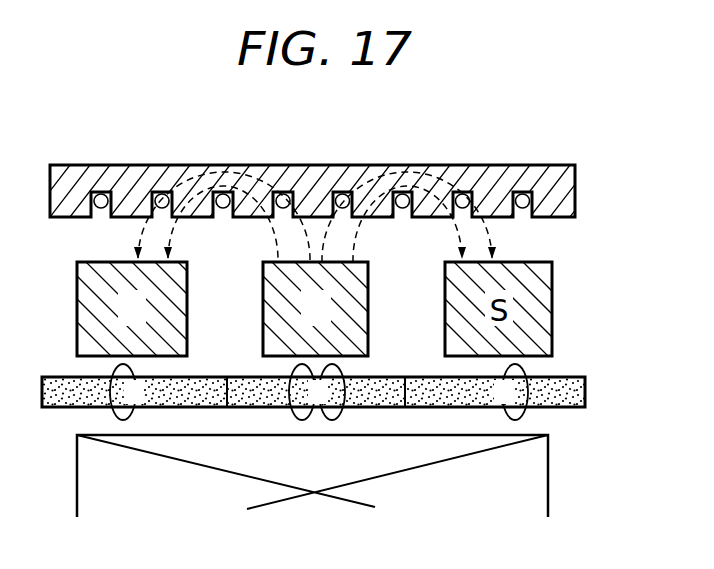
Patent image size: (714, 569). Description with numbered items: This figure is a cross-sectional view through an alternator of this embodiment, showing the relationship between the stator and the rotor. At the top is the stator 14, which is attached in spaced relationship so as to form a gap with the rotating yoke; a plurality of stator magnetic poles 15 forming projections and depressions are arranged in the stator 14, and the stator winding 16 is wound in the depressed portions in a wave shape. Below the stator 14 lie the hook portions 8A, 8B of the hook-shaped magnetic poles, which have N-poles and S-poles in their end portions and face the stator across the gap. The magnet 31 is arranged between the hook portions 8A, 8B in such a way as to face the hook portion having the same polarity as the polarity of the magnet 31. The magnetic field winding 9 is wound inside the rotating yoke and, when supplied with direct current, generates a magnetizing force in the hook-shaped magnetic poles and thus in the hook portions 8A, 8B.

The stator 14 is at (567, 167).
The stator magnetic poles 15 is at (497, 190).
The stator winding 16 is at (345, 192).
The hook portion 8A is at (365, 310).
The hook portion 8B is at (82, 294).
The magnet 31 is at (67, 407).
The magnetic field winding 9 is at (540, 468).